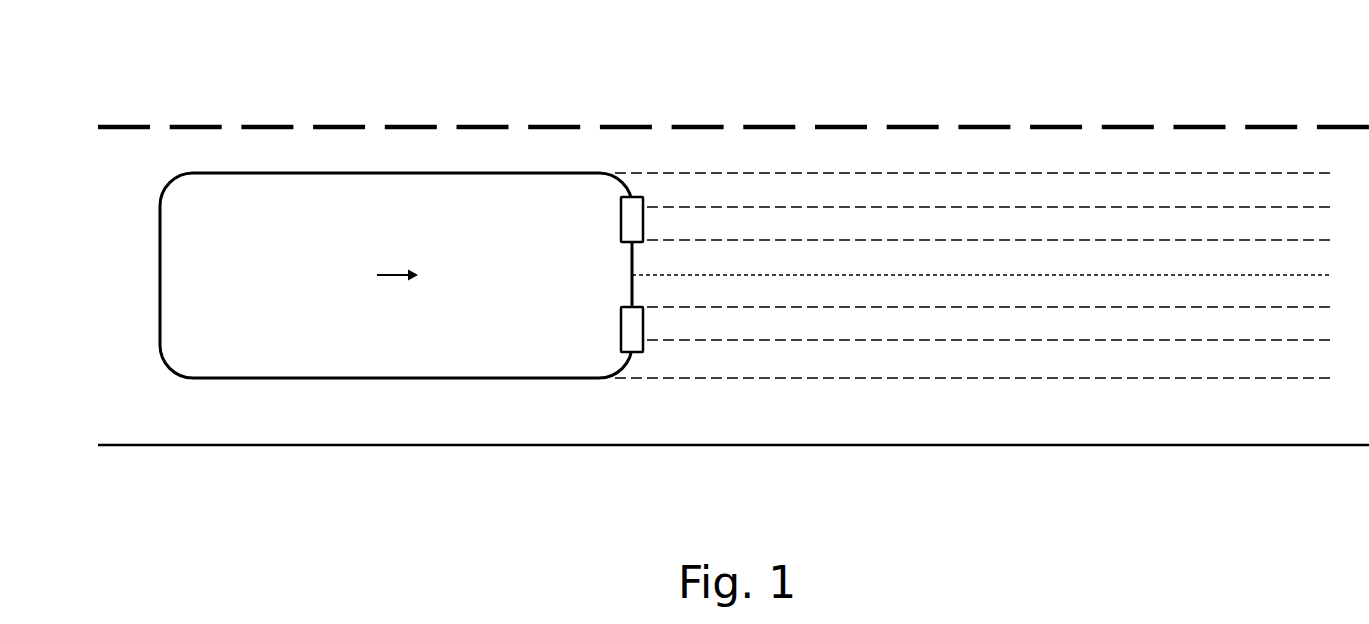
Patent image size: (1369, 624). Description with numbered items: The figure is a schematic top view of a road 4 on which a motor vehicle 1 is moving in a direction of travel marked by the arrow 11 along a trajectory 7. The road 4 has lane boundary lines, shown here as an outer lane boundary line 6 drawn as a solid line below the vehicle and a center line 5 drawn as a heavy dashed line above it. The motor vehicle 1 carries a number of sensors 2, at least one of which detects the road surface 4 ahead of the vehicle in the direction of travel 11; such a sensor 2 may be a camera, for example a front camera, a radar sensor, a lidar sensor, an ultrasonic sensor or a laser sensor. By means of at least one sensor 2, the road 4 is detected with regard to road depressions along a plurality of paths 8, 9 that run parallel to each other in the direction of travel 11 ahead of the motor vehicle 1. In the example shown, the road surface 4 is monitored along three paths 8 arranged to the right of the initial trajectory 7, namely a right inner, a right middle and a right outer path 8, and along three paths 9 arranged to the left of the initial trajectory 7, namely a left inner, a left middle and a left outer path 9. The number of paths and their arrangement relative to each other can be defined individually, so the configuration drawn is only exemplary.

The motor vehicle 1 is at (340, 197).
The direction of travel 11 is at (397, 272).
The sensor 2 is at (638, 208).
The road 4 is at (580, 153).
The center line 5 is at (1003, 125).
The outer lane boundary line 6 is at (998, 445).
The trajectory 7 is at (1090, 275).
The paths 8 is at (1147, 307).
The paths 9 is at (1213, 240).